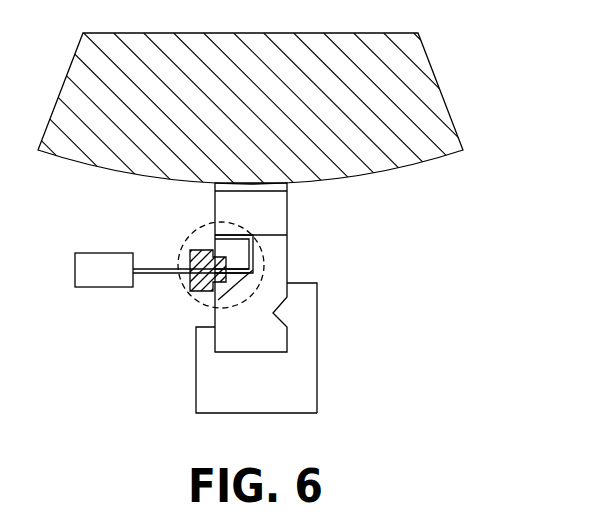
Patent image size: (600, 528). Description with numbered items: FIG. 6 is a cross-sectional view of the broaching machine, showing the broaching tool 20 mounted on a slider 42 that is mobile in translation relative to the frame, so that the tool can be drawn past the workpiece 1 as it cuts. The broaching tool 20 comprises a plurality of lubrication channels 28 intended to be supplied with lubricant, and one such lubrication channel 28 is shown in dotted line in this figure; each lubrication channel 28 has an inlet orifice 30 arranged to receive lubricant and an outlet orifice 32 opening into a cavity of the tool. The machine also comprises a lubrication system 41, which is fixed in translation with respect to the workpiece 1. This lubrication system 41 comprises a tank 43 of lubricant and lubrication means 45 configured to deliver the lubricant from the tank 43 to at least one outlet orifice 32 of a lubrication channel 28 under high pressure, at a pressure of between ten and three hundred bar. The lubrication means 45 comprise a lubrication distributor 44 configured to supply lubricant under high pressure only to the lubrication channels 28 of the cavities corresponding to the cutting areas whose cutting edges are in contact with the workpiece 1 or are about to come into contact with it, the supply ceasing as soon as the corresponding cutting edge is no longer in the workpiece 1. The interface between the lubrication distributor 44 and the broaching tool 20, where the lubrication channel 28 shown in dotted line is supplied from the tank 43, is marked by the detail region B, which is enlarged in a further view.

The workpiece 1 is at (402, 92).
The broaching tool 20 is at (280, 302).
The lubrication channel 28 is at (258, 250).
The inlet orifice 30 is at (256, 252).
The outlet orifice 32 is at (250, 235).
The lubrication system 41 is at (138, 278).
The slider 42 is at (268, 386).
The tank 43 is at (100, 262).
The lubrication distributor 44 is at (184, 295).
The lubrication means 45 is at (145, 285).
The detail region B is at (197, 232).